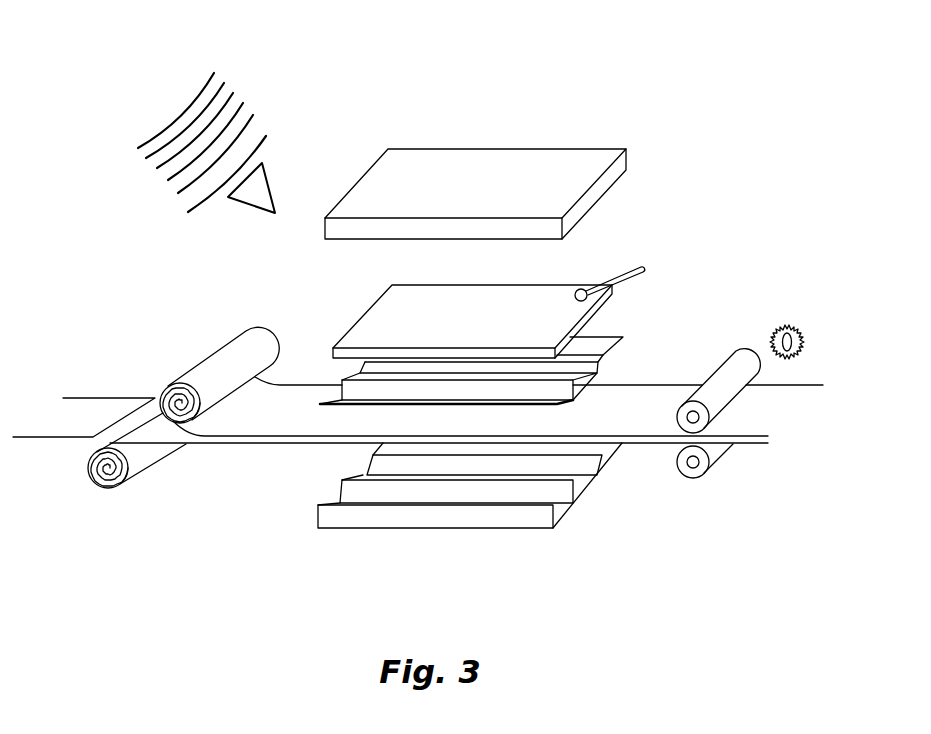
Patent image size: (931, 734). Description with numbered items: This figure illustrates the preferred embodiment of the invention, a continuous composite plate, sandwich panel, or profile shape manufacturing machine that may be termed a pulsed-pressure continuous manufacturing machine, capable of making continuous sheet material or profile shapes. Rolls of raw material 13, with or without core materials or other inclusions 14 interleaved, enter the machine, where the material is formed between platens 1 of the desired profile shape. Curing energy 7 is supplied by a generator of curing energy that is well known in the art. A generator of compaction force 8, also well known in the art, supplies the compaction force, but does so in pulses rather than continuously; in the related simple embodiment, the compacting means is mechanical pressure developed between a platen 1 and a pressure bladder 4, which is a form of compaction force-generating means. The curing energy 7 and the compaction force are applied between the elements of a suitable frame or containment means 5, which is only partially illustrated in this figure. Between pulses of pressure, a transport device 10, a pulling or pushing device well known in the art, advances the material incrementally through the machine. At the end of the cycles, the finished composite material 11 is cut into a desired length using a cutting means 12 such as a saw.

The platens 1 is at (623, 339).
The pressure bladder 4 is at (382, 310).
The frame or containment means 5 is at (627, 151).
The curing energy 7 is at (167, 125).
The generator of compaction force 8 is at (643, 269).
The transport device 10 is at (708, 468).
The finished composite material 11 is at (778, 408).
The cutting means 12 is at (797, 317).
The rolls of raw material 13 is at (213, 373).
The core materials or other inclusions 14 is at (96, 412).